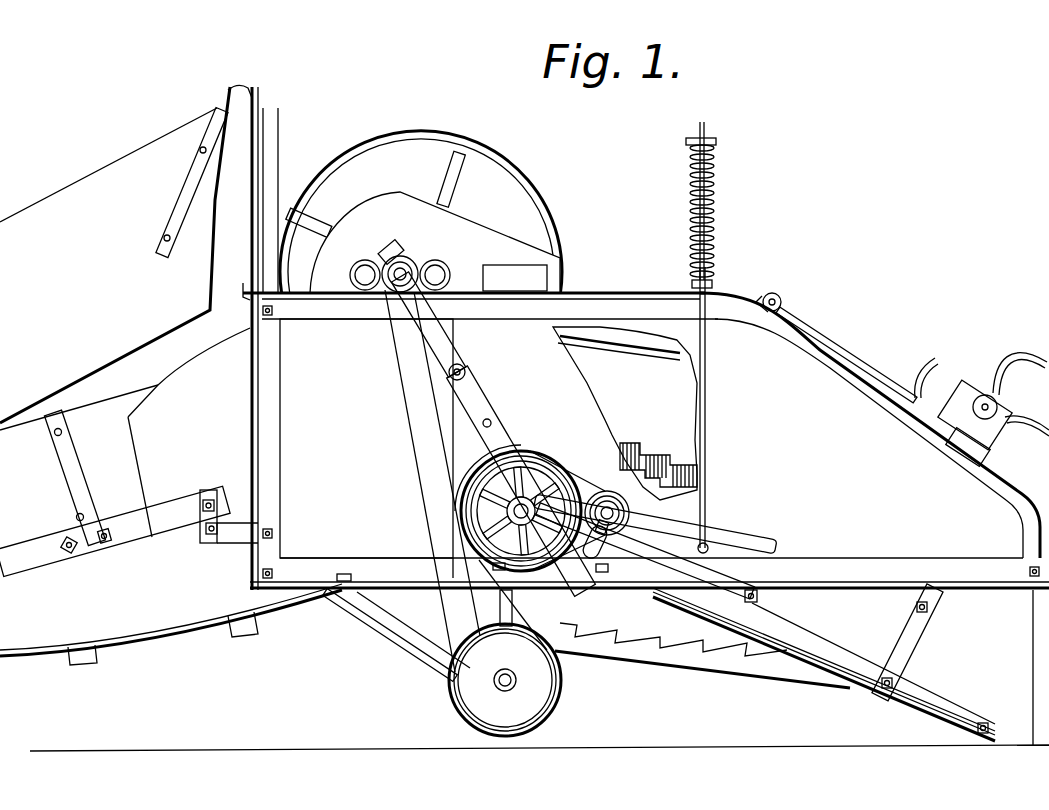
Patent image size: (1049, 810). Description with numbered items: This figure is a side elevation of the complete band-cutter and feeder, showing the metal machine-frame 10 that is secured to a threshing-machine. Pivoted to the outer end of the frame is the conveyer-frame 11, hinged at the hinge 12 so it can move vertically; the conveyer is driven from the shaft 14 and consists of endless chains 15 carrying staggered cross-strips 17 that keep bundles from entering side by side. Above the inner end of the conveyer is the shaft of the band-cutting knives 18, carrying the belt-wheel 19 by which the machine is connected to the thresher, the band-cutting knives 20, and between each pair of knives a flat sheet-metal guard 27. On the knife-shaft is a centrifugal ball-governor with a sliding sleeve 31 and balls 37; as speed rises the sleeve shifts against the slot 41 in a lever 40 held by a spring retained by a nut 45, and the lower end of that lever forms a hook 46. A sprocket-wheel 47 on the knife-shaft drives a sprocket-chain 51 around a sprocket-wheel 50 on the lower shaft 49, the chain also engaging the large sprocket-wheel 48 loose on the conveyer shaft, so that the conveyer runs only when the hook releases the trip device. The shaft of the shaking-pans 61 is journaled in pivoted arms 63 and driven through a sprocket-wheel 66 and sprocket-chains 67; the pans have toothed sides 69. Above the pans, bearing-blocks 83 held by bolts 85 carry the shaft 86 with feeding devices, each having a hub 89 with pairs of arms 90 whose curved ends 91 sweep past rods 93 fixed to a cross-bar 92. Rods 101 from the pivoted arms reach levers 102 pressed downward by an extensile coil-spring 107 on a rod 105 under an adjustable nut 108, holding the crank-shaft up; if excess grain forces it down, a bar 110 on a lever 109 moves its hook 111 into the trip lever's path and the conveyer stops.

The frame of the machine 10 is at (638, 415).
The conveyer-frame 11 is at (136, 538).
The hinge 12 is at (210, 547).
The shaft 14 is at (603, 577).
The endless chains 15 is at (200, 628).
The cross-strips 17 is at (260, 632).
The shaft of the band-cutting knives 18 is at (429, 247).
The belt-wheel 19 is at (536, 228).
The band-cutting knives 20 is at (435, 242).
The flat sheet-metal guard 27 is at (290, 274).
The sliding sleeve 31 is at (382, 264).
The balls 37 is at (449, 270).
The lever 40 is at (467, 361).
The slot 41 is at (386, 244).
The nut 45 is at (494, 423).
The hook 46 is at (538, 490).
The sprocket-wheel 47 is at (408, 254).
The large sprocket-wheel 48 is at (547, 477).
The shaft 49 is at (503, 682).
The sprocket-wheel 50 is at (563, 702).
The sprocket-chain 51 is at (418, 518).
The shaft of the shaking-pans 61 is at (607, 500).
The arms 63 is at (728, 545).
The sprocket-wheel 66 is at (612, 537).
The sprocket-chains 67 is at (593, 487).
The sides 69 is at (657, 463).
The bearing-blocks 83 is at (983, 433).
The bolts 85 is at (1007, 411).
The shaft 86 is at (996, 395).
The hub 89 is at (980, 397).
The arms 90 is at (870, 425).
The curved ends 91 is at (921, 366).
The cross-bar 92 is at (778, 297).
The rods 93 is at (821, 334).
The rods 101 is at (707, 472).
The levers 102 is at (716, 284).
The rod 105 is at (714, 232).
The extensile coil-spring 107 is at (714, 201).
The adjustable nut 108 is at (711, 140).
The lever 109 is at (646, 552).
The bar 110 is at (628, 540).
The hook 111 is at (487, 473).